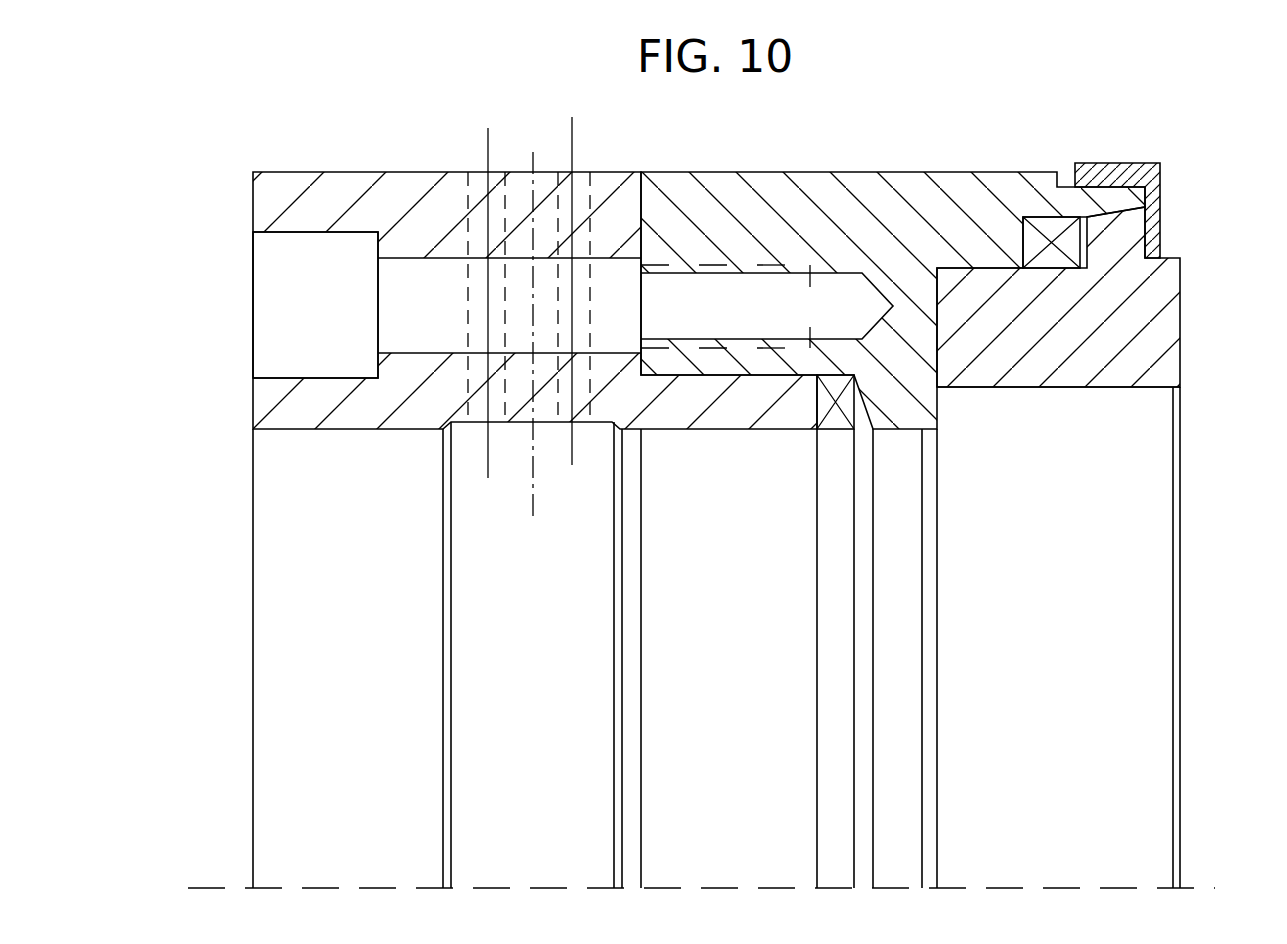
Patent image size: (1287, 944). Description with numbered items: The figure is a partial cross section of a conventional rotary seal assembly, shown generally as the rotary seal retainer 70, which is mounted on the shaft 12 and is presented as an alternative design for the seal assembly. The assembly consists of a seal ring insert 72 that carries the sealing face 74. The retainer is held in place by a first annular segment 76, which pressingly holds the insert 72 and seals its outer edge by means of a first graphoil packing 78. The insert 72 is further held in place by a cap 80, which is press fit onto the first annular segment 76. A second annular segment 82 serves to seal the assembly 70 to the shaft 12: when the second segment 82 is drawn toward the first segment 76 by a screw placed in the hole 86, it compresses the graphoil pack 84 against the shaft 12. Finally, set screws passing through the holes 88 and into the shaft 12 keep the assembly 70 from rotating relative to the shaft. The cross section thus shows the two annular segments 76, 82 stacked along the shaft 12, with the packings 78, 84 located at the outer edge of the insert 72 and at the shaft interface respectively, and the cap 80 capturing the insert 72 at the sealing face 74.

The rotary seal retainer 70 is at (970, 125).
The seal ring insert 72 is at (1082, 372).
The sealing face 74 is at (1181, 317).
The first annular segment 76 is at (1005, 172).
The first graphoil packing 78 is at (1070, 248).
The cap 80 is at (1152, 164).
The second annular segment 82 is at (428, 186).
The graphoil pack 84 is at (844, 425).
The hole 86 is at (270, 260).
The holes 88 is at (562, 172).
The shaft 12 is at (1152, 806).